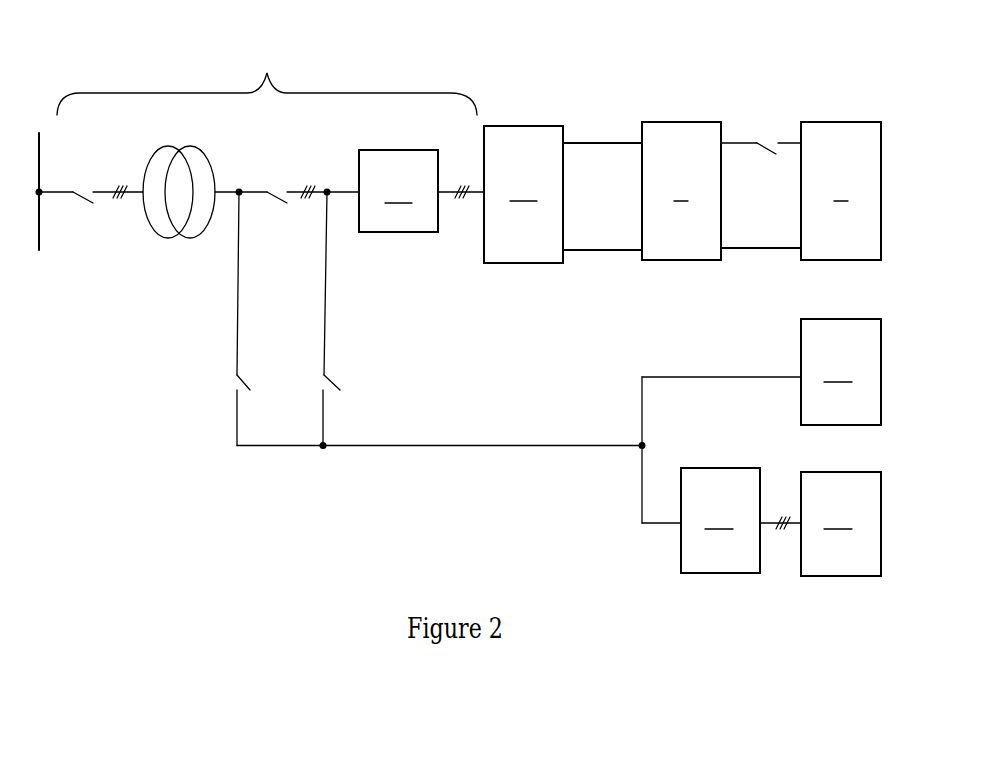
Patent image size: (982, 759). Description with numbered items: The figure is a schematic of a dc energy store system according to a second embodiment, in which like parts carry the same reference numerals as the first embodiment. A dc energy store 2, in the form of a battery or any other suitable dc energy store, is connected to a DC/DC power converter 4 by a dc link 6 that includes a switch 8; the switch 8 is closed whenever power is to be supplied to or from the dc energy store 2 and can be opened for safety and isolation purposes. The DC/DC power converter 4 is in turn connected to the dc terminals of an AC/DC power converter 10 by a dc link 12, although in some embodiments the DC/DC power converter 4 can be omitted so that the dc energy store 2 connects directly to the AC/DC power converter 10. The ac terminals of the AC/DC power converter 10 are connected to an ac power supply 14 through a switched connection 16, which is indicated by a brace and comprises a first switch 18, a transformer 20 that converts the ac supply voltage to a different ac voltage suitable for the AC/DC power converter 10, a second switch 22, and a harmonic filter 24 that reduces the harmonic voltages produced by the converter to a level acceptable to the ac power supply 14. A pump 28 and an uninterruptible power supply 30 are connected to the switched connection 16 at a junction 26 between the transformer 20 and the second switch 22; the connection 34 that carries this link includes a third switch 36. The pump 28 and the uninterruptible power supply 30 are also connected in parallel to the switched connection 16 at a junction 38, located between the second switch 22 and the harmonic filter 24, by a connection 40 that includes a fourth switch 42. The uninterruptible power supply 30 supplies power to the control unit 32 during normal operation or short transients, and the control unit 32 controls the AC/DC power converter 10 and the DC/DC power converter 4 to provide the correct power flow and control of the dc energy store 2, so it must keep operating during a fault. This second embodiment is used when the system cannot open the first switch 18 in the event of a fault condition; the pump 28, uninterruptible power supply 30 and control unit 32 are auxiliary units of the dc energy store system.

The dc energy store 2 is at (841, 191).
The DC/DC power converter 4 is at (681, 191).
The dc link 6 is at (751, 254).
The switch 8 is at (769, 131).
The AC/DC power converter 10 is at (523, 194).
The dc link 12 is at (612, 255).
The ac power supply 14 is at (48, 243).
The switched connection 16 is at (267, 80).
The first switch 18 is at (92, 181).
The transformer 20 is at (192, 227).
The second switch 22 is at (293, 206).
The harmonic filter 24 is at (421, 191).
The junction 26 is at (240, 177).
The pump 28 is at (761, 372).
The uninterruptible power supply 30 is at (721, 520).
The control unit 32 is at (841, 524).
The connection 34 is at (231, 311).
The third switch 36 is at (230, 384).
The junction 38 is at (326, 172).
The connection 40 is at (344, 288).
The fourth switch 42 is at (346, 386).